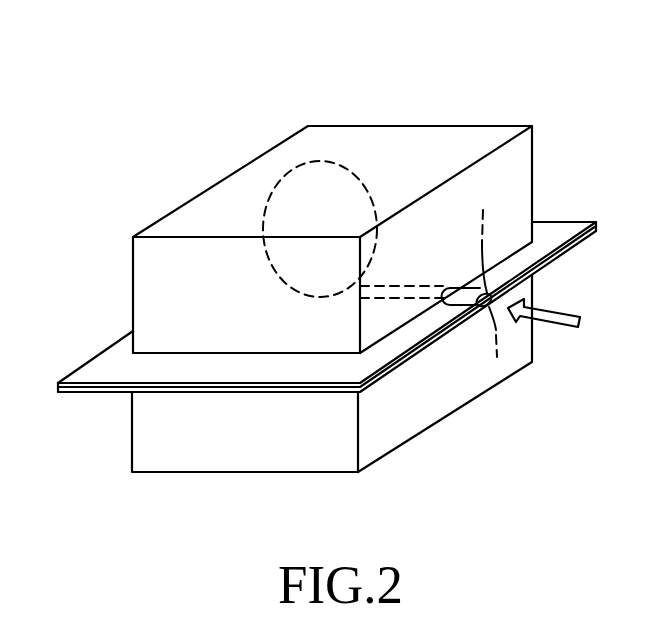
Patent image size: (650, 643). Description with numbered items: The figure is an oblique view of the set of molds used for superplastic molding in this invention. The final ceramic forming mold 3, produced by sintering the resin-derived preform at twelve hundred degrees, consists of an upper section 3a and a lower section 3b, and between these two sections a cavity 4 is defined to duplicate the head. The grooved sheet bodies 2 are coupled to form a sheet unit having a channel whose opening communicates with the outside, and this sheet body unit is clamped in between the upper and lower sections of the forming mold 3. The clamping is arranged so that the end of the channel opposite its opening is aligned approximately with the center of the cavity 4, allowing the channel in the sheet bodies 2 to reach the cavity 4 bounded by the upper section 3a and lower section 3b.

The grooved sheet bodies 2 is at (98, 367).
The ceramic forming mold 3 is at (332, 270).
The upper section 3a is at (474, 148).
The lower section 3b is at (425, 407).
The cavity 4 is at (328, 192).